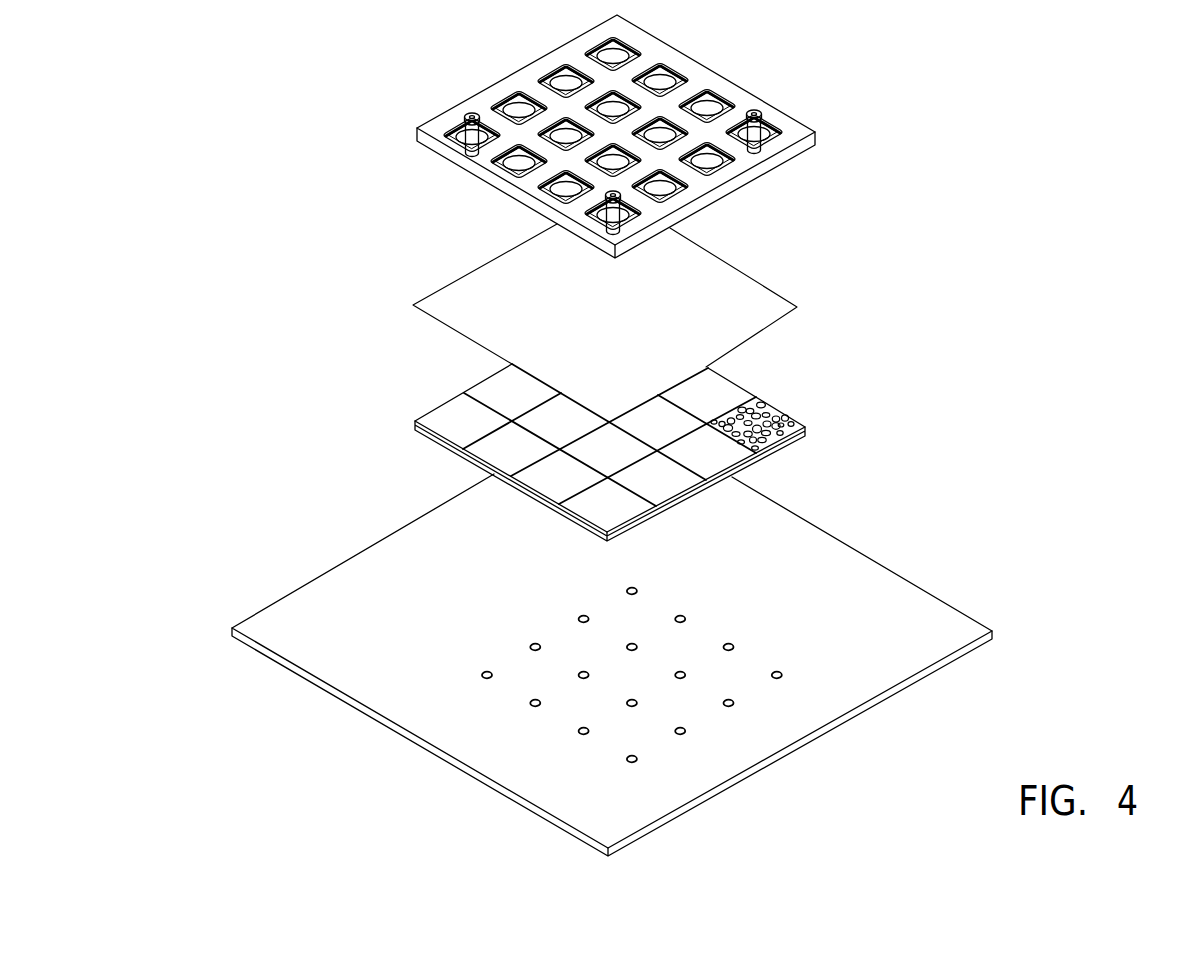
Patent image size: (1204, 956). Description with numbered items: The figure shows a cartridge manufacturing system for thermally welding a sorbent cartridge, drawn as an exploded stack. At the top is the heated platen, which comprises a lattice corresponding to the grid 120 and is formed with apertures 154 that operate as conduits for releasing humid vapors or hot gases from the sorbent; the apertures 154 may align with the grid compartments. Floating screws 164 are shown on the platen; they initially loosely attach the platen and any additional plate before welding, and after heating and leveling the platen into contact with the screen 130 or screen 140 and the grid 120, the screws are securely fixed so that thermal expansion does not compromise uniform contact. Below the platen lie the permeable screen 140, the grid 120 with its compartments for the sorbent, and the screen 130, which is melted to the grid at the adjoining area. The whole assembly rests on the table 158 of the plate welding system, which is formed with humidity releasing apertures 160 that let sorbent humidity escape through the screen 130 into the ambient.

The grid 120 is at (480, 387).
The screen 130 is at (417, 423).
The screen 140 is at (482, 285).
The apertures 154 is at (518, 171).
The table 158 is at (317, 642).
The humidity releasing apertures 160 is at (482, 674).
The floating screws 164 is at (465, 115).